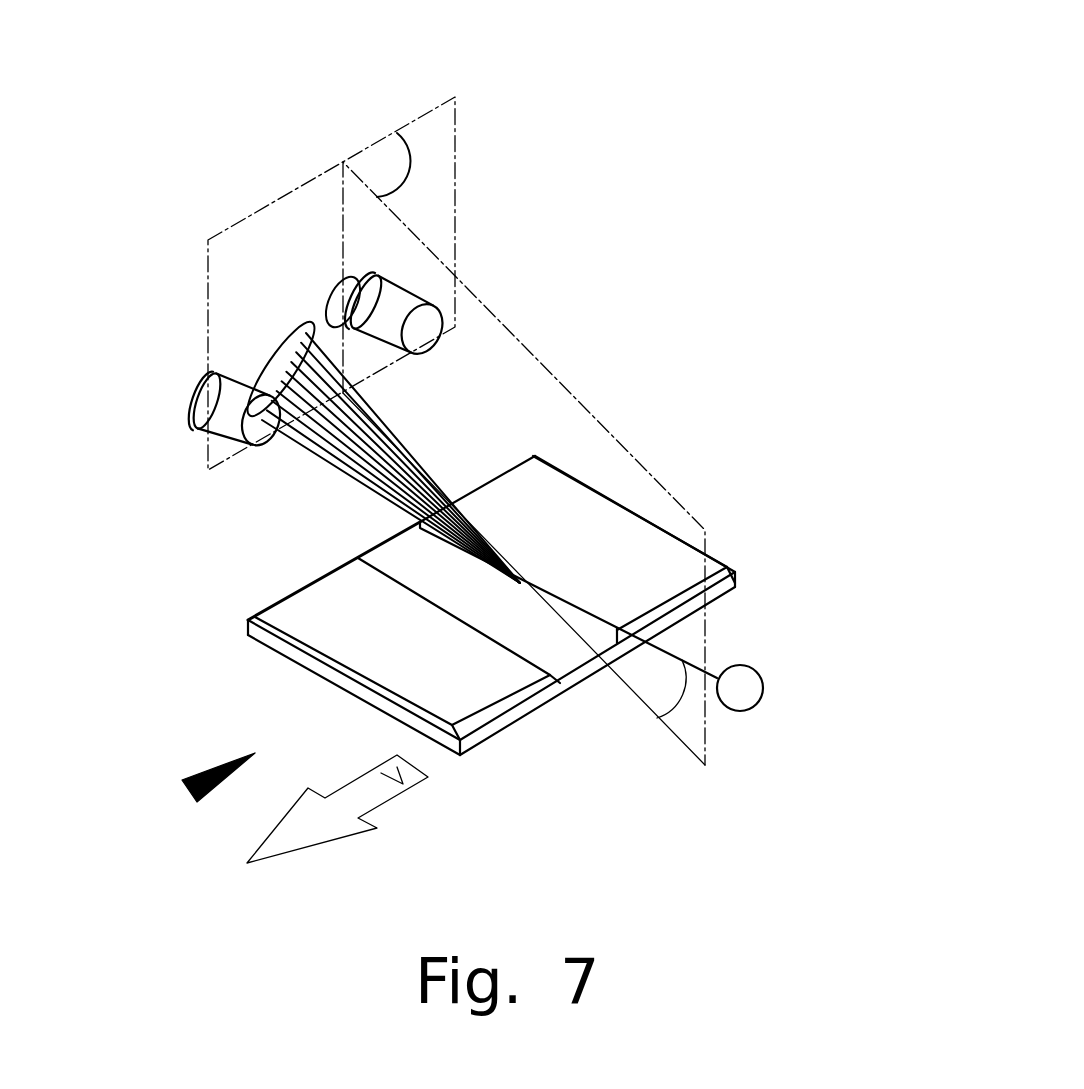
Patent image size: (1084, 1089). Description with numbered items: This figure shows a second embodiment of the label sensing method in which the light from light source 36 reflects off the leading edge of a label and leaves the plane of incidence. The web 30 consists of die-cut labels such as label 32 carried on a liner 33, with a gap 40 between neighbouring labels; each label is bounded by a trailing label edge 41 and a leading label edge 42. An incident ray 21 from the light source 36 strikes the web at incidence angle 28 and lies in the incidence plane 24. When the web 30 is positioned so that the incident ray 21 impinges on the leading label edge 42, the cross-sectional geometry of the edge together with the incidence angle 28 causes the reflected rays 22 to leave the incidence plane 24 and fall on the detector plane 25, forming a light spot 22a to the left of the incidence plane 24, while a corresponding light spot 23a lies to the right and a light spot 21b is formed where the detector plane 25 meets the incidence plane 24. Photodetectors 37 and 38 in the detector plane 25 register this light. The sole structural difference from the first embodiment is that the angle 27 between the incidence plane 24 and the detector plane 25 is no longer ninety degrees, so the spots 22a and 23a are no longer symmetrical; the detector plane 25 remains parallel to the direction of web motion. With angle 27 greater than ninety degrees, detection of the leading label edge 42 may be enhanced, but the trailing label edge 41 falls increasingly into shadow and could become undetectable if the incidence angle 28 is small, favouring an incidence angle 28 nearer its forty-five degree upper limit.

The incident ray 21 is at (577, 630).
The light spot 21b is at (273, 229).
The reflected rays 22 is at (330, 465).
The light spot 22a is at (185, 378).
The light spot 23a is at (466, 289).
The incidence plane 24 is at (657, 481).
The detector plane 25 is at (362, 258).
The angle 27 is at (493, 177).
The incidence angle 28 is at (686, 758).
The web 30 is at (192, 793).
The label 32 is at (380, 657).
The liner 33 is at (287, 652).
The light source 36 is at (740, 711).
The photodetector 37 is at (195, 405).
The photodetector 38 is at (485, 300).
The gap 40 is at (522, 785).
The trailing label edge 41 is at (489, 776).
The leading label edge 42 is at (618, 633).